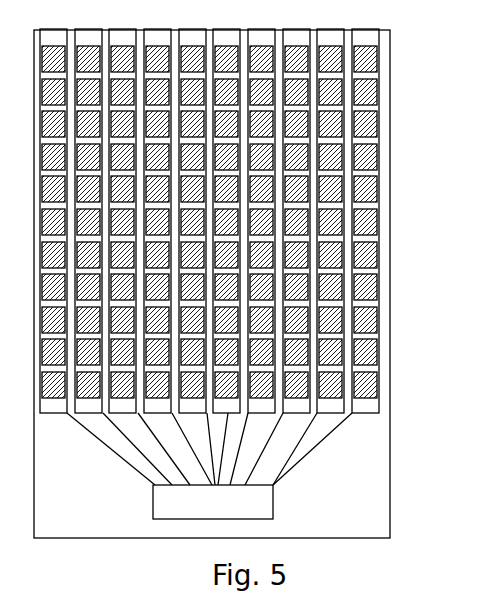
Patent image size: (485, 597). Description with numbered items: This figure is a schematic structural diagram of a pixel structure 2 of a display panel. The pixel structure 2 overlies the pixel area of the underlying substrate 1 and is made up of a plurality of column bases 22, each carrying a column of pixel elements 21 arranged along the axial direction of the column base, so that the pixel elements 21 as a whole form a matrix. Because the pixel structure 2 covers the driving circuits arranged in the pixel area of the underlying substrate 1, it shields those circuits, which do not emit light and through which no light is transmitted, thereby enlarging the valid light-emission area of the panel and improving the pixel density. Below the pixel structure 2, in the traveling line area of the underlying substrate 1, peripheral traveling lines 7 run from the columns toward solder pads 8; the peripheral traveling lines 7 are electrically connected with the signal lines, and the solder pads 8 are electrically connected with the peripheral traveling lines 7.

The underlying substrate 1 is at (372, 488).
The pixel structure 2 is at (245, 220).
The pixel elements 21 is at (368, 157).
The column bases 22 is at (367, 37).
The peripheral traveling lines 7 is at (310, 452).
The solder pads 8 is at (273, 503).